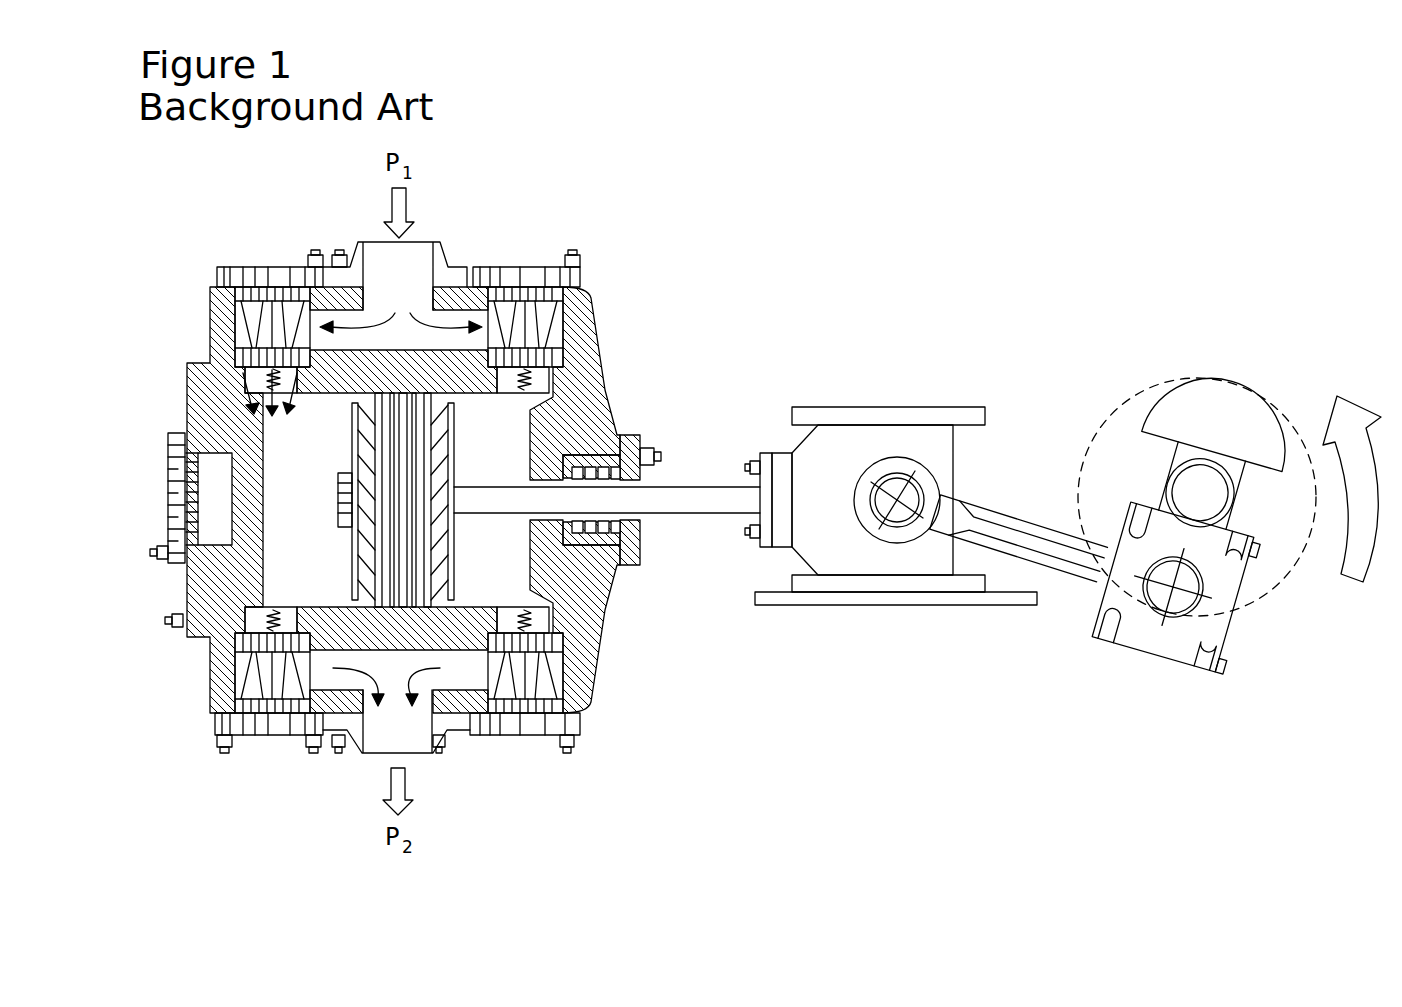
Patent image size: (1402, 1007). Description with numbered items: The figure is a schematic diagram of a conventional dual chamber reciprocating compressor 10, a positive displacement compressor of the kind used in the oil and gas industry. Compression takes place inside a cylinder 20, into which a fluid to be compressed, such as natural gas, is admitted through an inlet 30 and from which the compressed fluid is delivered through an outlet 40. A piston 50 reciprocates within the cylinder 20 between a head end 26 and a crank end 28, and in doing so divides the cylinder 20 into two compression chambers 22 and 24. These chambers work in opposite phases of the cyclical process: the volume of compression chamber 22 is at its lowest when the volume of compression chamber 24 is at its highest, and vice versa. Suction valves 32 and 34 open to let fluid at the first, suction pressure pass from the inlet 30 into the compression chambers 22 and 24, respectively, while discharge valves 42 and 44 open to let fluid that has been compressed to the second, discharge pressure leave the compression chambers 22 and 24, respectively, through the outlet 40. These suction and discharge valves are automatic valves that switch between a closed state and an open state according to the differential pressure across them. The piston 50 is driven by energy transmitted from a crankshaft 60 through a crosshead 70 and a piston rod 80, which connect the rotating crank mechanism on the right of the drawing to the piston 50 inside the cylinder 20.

The dual chamber reciprocating compressor 10 is at (979, 245).
The cylinder 20 is at (466, 637).
The compression chamber 22 is at (293, 573).
The compression chamber 24 is at (505, 438).
The head end 26 is at (197, 413).
The crank end 28 is at (592, 425).
The inlet 30 is at (405, 268).
The suction valve 32 is at (262, 314).
The suction valve 34 is at (540, 328).
The outlet 40 is at (413, 742).
The discharge valve 42 is at (253, 683).
The discharge valve 44 is at (530, 680).
The piston 50 is at (435, 563).
The crankshaft 60 is at (1198, 618).
The crosshead 70 is at (855, 448).
The piston rod 80 is at (673, 487).